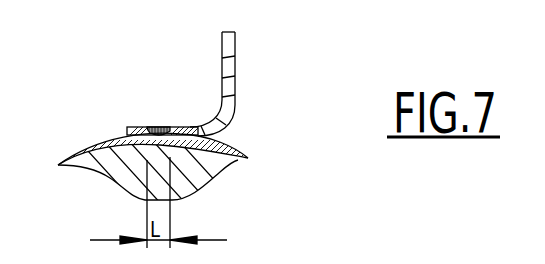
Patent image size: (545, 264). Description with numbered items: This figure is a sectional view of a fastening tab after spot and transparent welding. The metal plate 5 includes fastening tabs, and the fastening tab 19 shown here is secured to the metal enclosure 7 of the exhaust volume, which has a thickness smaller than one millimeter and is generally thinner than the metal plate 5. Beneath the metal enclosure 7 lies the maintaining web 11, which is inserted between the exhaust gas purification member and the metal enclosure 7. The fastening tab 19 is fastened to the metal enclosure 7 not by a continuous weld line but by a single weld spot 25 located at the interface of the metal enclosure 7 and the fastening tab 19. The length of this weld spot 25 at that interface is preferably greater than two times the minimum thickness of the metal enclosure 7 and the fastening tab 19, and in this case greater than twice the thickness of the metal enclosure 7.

The metal plate 5 is at (247, 93).
The metal enclosure 7 is at (236, 158).
The maintaining web 11 is at (208, 168).
The fastening tab 19 is at (128, 131).
The weld spot 25 is at (155, 127).